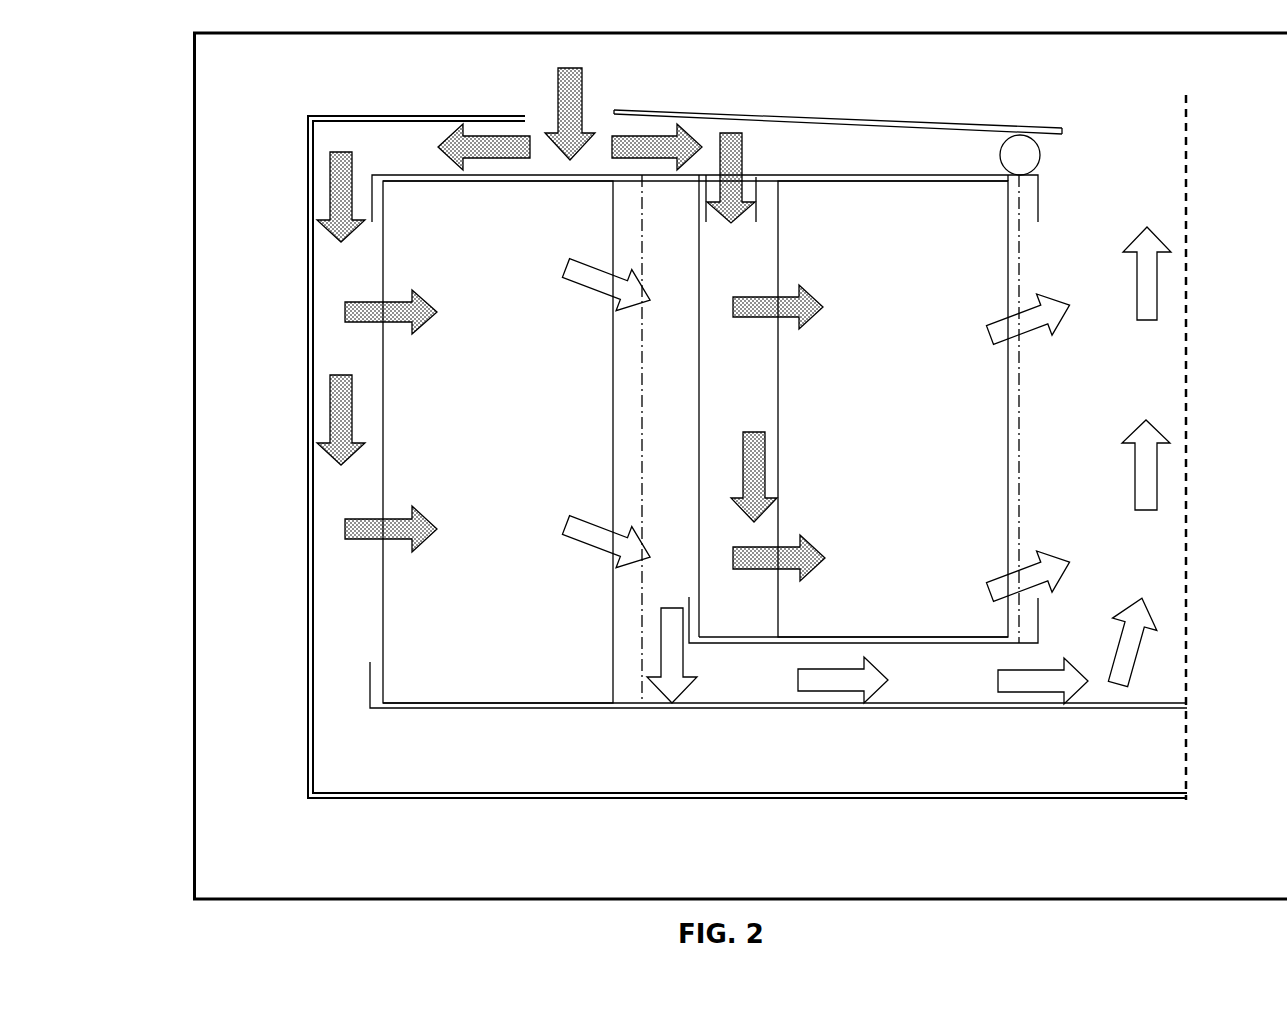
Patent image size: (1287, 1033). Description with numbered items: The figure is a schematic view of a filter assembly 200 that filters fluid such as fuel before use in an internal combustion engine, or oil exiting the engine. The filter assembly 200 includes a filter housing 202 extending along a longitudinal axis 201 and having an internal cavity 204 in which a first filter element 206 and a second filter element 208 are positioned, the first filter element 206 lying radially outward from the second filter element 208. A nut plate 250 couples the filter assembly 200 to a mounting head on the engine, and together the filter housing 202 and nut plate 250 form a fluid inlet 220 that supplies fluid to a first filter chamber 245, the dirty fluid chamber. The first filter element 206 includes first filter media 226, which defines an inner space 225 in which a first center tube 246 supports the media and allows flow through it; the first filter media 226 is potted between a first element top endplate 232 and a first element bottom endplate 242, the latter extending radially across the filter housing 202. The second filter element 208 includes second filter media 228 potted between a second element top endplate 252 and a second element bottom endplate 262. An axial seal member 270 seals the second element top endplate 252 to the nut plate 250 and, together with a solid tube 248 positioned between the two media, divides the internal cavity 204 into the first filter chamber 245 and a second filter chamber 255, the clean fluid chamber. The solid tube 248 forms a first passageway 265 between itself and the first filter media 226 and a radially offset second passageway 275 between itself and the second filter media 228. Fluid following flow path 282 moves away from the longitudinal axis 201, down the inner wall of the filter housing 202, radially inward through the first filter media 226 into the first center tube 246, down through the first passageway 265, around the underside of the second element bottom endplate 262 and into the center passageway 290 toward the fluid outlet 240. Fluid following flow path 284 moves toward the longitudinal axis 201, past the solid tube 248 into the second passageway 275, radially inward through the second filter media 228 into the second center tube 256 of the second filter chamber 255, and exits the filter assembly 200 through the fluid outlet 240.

The filter assembly 200 is at (168, 108).
The longitudinal axis 201 is at (1190, 250).
The filter housing 202 is at (308, 355).
The internal cavity 204 is at (330, 481).
The first filter element 206 is at (390, 257).
The second filter element 208 is at (827, 197).
The fluid inlet 220 is at (614, 110).
The inner space 225 is at (666, 566).
The first filter media 226 is at (413, 585).
The second filter media 228 is at (927, 585).
The first element top endplate 232 is at (383, 175).
The fluid outlet 240 is at (1062, 131).
The first element bottom endplate 242 is at (467, 708).
The first filter chamber 245 is at (711, 145).
The first center tube 246 is at (642, 577).
The solid tube 248 is at (697, 610).
The nut plate 250 is at (940, 125).
The second element top endplate 252 is at (982, 168).
The second filter chamber 255 is at (1163, 687).
The second center tube 256 is at (1020, 553).
The second element bottom endplate 262 is at (787, 645).
The first passageway 265 is at (673, 677).
The axial seal member 270 is at (1025, 145).
The second passageway 275 is at (751, 166).
The flow path 282 is at (453, 138).
The flow path 284 is at (672, 127).
The center passageway 290 is at (1138, 386).